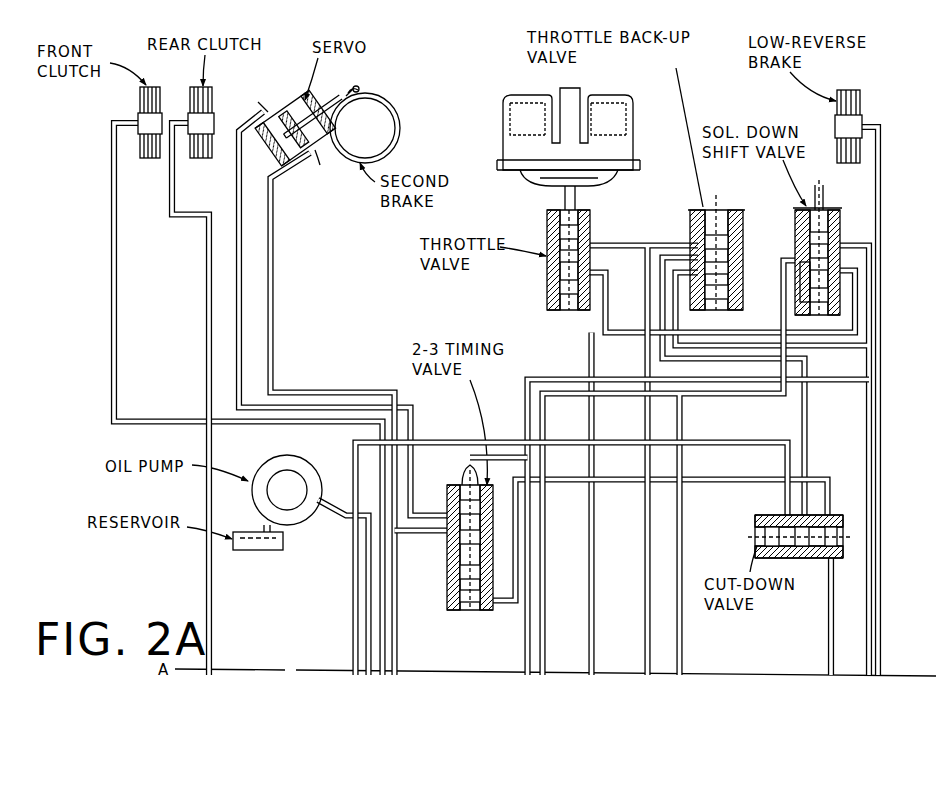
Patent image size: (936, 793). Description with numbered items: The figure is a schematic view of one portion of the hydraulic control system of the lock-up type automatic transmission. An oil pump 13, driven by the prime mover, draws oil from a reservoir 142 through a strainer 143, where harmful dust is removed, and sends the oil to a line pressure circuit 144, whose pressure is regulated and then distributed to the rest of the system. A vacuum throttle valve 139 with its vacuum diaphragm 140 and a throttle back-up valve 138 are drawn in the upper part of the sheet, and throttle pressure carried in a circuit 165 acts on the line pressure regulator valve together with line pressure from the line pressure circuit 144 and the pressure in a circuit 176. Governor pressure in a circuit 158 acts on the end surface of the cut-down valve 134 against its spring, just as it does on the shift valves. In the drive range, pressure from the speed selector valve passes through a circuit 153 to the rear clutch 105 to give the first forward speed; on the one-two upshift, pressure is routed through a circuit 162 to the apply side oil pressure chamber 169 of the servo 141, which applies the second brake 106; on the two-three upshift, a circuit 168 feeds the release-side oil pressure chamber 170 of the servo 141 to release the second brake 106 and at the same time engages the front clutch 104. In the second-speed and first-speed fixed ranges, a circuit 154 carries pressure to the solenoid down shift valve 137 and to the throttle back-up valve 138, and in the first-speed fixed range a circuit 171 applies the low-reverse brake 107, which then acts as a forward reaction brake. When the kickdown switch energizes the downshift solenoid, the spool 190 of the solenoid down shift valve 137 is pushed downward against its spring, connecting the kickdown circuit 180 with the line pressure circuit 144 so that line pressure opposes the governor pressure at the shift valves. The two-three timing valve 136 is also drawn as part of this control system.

The oil pump 13 is at (272, 458).
The front clutch 104 is at (141, 115).
The rear clutch 105 is at (196, 81).
The second brake 106 is at (430, 93).
The low-reverse brake 107 is at (915, 118).
The cut-down valve 134 is at (841, 517).
The 2-3 timing valve 136 is at (445, 593).
The solenoid down shift valve 137 is at (810, 245).
The throttle back-up valve 138 is at (764, 195).
The vacuum throttle valve 139 is at (640, 206).
The vacuum diaphragm 140 is at (667, 126).
The servo 141 is at (303, 125).
The reservoir 142 is at (262, 551).
The strainer 143 is at (256, 532).
The line pressure circuit 144 is at (860, 272).
The circuit 153 is at (207, 311).
The circuit 154 is at (858, 243).
The circuit 158 is at (829, 660).
The circuit 162 is at (237, 185).
The circuit 165 is at (647, 365).
The circuit 168 is at (117, 185).
The apply side oil pressure chamber 169 is at (266, 117).
The release-side oil pressure chamber 170 is at (280, 81).
The circuit 171 is at (881, 230).
The circuit 176 is at (418, 446).
The kickdown circuit 180 is at (783, 300).
The spool 190 is at (800, 237).